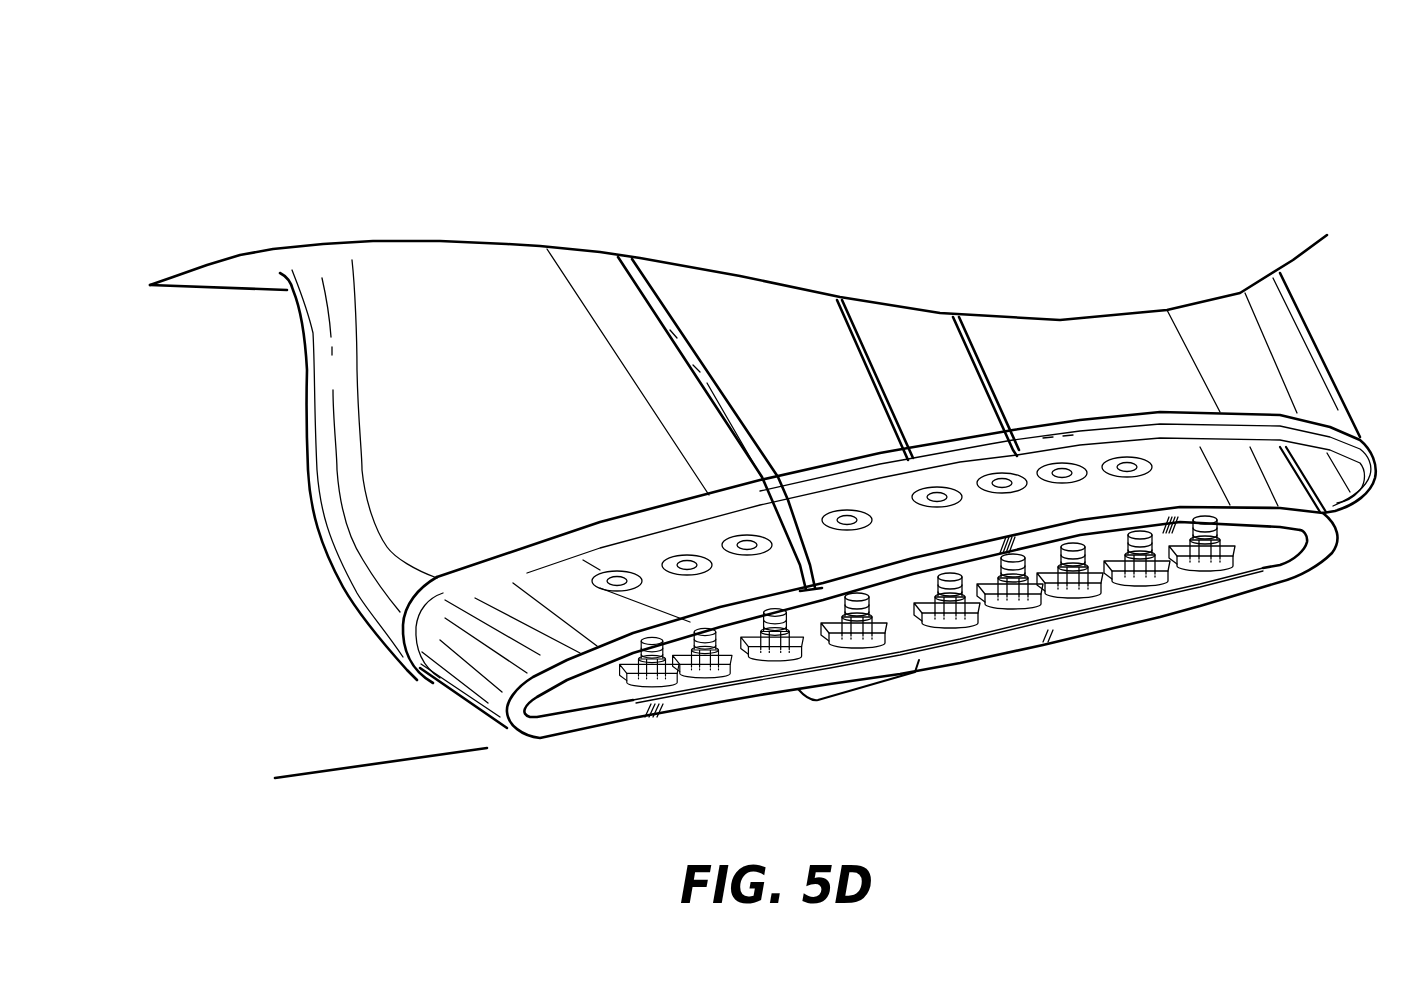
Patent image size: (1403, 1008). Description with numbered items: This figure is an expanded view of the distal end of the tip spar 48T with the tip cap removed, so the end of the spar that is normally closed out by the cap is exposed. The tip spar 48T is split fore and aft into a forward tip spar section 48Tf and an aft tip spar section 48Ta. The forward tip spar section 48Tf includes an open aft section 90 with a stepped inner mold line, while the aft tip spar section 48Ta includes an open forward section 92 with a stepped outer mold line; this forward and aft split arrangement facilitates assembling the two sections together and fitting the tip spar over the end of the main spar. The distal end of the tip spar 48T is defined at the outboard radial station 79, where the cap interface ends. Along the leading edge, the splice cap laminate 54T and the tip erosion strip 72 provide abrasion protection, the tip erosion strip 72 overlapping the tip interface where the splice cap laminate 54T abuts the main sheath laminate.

The tip spar 48T is at (666, 198).
The forward tip spar section 48Tf is at (800, 334).
The aft tip spar section 48Ta is at (353, 562).
The splice cap laminate 54T is at (923, 337).
The tip erosion strip 72 is at (1110, 335).
The outboard radial station 79 is at (394, 762).
The open aft section 90 is at (922, 651).
The open forward section 92 is at (795, 696).